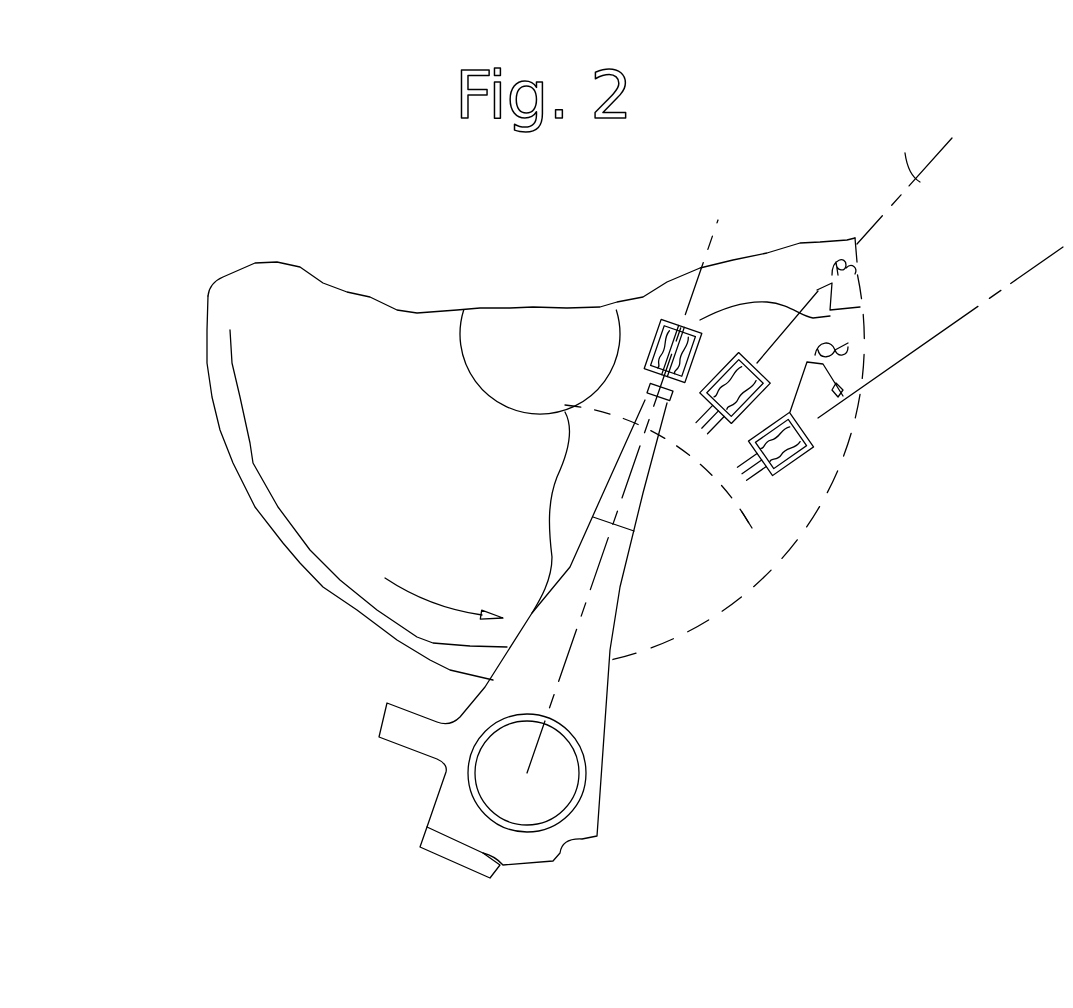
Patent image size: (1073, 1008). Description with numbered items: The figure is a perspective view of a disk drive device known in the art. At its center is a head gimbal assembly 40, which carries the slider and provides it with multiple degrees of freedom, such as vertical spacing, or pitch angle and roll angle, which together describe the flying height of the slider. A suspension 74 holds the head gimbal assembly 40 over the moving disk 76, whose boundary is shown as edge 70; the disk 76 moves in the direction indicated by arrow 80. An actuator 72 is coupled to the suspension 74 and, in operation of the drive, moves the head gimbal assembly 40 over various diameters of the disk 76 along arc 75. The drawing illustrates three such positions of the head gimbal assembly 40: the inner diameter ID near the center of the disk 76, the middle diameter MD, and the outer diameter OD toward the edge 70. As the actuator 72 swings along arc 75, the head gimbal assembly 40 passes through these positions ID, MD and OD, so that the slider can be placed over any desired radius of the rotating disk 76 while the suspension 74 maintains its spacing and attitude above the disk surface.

The head gimbal assembly 40 is at (700, 318).
The edge 70 is at (291, 566).
The actuator 72 is at (597, 804).
The suspension 74 is at (643, 503).
The arc 75 is at (741, 512).
The disk 76 is at (384, 469).
The arrow 80 is at (446, 604).
The inner diameter ID is at (672, 316).
The middle diameter MD is at (738, 353).
The outer diameter OD is at (816, 444).